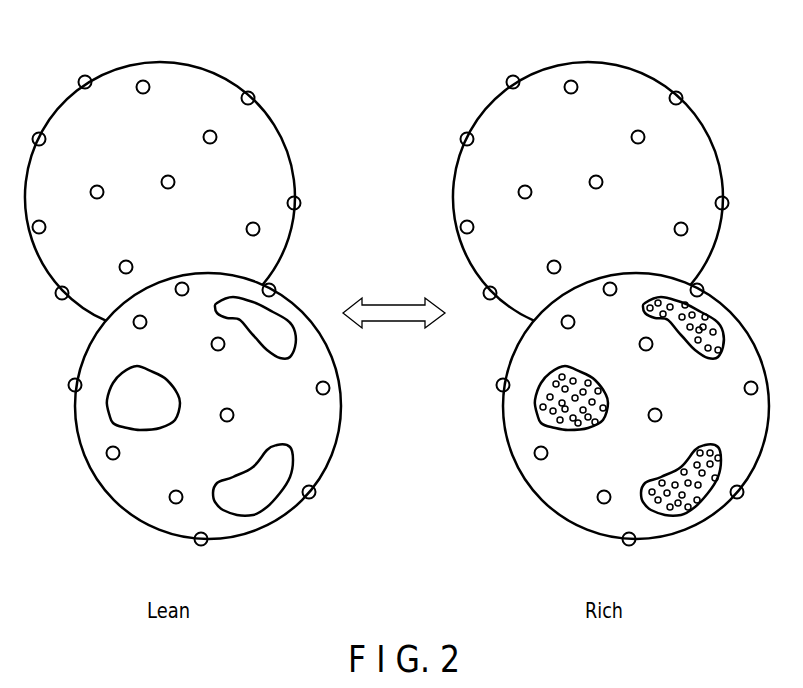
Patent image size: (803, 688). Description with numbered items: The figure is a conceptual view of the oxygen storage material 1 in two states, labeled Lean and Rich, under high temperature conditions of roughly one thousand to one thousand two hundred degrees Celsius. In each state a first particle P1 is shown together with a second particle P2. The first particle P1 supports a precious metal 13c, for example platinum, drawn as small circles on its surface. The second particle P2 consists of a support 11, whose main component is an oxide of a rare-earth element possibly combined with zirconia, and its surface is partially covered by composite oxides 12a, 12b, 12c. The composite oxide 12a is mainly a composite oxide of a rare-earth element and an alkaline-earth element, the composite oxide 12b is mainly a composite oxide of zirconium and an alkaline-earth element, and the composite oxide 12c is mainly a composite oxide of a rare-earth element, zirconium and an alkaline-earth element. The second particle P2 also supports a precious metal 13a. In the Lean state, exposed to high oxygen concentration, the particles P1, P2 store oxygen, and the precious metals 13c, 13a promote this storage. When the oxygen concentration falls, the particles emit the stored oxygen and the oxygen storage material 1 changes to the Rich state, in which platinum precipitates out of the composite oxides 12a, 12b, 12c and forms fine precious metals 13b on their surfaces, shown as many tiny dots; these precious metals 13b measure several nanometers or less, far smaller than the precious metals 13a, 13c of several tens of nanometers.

The oxygen storage material 1 is at (314, 70).
The support 11 is at (337, 427).
The composite oxide 12a is at (117, 380).
The composite oxide 12b is at (283, 330).
The composite oxide 12c is at (267, 497).
The precious metal 13a is at (173, 502).
The precious metal 13b is at (712, 322).
The precious metal 13c is at (217, 133).
The first particle P1 is at (63, 112).
The second particle P2 is at (112, 518).